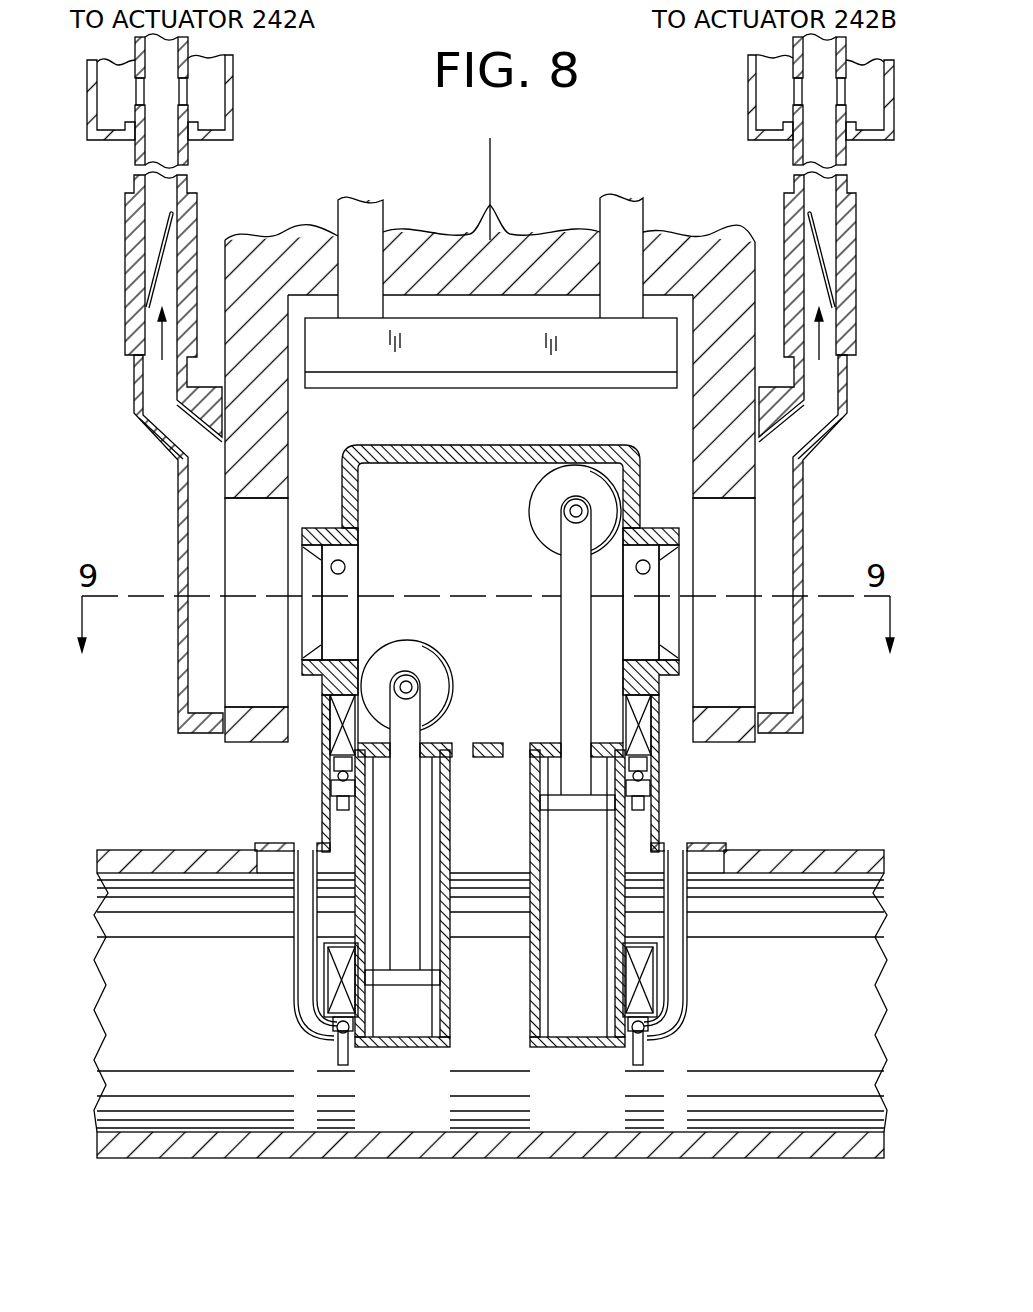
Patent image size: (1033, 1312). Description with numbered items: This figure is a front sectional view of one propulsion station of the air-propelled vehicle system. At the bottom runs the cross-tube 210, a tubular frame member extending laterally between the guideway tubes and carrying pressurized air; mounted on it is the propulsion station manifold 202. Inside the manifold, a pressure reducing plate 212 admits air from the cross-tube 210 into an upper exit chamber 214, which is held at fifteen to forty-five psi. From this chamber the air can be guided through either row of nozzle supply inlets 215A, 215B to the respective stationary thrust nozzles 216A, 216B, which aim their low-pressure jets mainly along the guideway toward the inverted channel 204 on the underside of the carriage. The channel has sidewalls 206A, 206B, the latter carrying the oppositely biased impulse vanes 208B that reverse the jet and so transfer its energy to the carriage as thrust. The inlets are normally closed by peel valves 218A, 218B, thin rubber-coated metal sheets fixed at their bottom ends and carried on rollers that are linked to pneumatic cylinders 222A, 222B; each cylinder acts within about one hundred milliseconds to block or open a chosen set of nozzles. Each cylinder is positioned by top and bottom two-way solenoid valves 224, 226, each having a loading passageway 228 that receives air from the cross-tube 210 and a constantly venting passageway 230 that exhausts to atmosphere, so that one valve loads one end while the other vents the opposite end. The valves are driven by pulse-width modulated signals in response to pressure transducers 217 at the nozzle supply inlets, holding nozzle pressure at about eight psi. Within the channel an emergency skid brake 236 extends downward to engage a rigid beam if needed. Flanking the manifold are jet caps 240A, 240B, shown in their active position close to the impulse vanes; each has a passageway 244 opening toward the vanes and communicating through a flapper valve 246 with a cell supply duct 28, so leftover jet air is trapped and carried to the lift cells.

The cell supply duct 28 is at (208, 106).
The flapper valve 246 is at (170, 237).
The passageway 244 is at (493, 447).
The jet cap 240A is at (178, 536).
The jet cap 240B is at (803, 536).
The impulse vanes 208B is at (258, 673).
The inverted channel 204 is at (490, 222).
The channel sidewall 206A is at (288, 433).
The channel sidewall 206B is at (693, 445).
The propulsion station manifold 202 is at (446, 445).
The emergency skid brake 236 is at (492, 357).
The upper exit chamber 214 is at (487, 550).
The pressure transducer 217 is at (345, 567).
The nozzle supply inlet 215A is at (327, 584).
The nozzle supply inlet 215B is at (652, 587).
The thrust nozzle 216A is at (308, 633).
The thrust nozzle 216B is at (672, 630).
The peel valve 218A is at (452, 690).
The peel valve 218B is at (592, 596).
The pressure reducing plate 212 is at (481, 745).
The solenoid valve 224 is at (330, 753).
The venting passageway 230 is at (332, 779).
The loading passageway 228 is at (340, 810).
The solenoid valve 226 is at (340, 988).
The pneumatic cylinder 222A is at (451, 1018).
The pneumatic cylinder 222B is at (531, 947).
The cross-tube 210 is at (430, 1158).